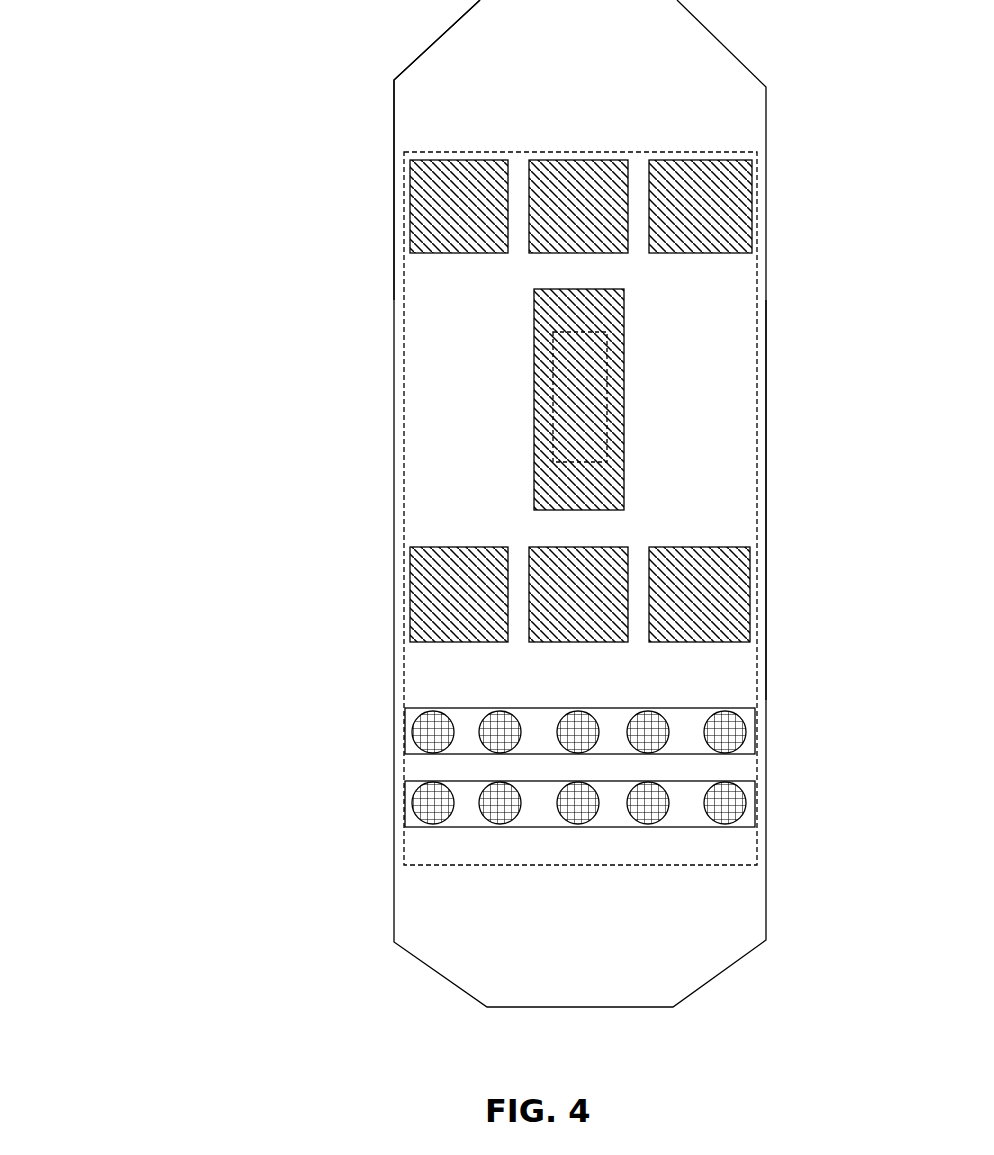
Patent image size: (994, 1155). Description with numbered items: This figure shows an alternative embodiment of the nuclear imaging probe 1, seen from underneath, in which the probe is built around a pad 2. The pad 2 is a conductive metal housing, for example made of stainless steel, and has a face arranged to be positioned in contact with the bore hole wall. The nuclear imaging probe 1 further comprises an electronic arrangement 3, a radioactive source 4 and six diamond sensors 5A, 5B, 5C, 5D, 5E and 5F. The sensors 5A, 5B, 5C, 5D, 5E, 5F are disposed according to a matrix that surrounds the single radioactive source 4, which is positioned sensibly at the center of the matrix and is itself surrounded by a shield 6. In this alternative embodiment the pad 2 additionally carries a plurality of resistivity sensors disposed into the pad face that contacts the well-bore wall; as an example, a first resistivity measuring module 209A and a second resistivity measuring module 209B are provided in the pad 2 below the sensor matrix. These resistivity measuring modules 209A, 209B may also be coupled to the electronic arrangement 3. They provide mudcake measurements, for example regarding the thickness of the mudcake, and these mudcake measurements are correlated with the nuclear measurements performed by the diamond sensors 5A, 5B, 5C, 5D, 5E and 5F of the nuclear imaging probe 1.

The nuclear imaging probe 1 is at (192, 523).
The pad 2 is at (394, 80).
The electronic arrangement 3 is at (758, 484).
The radioactive source 4 is at (536, 370).
The sensor 5A is at (405, 198).
The sensor 5B is at (548, 155).
The sensor 5C is at (688, 152).
The sensor 5D is at (760, 576).
The sensor 5E is at (550, 624).
The sensor 5F is at (418, 604).
The shield 6 is at (536, 308).
The first resistivity measuring module 209A is at (403, 753).
The second resistivity measuring module 209B is at (468, 826).